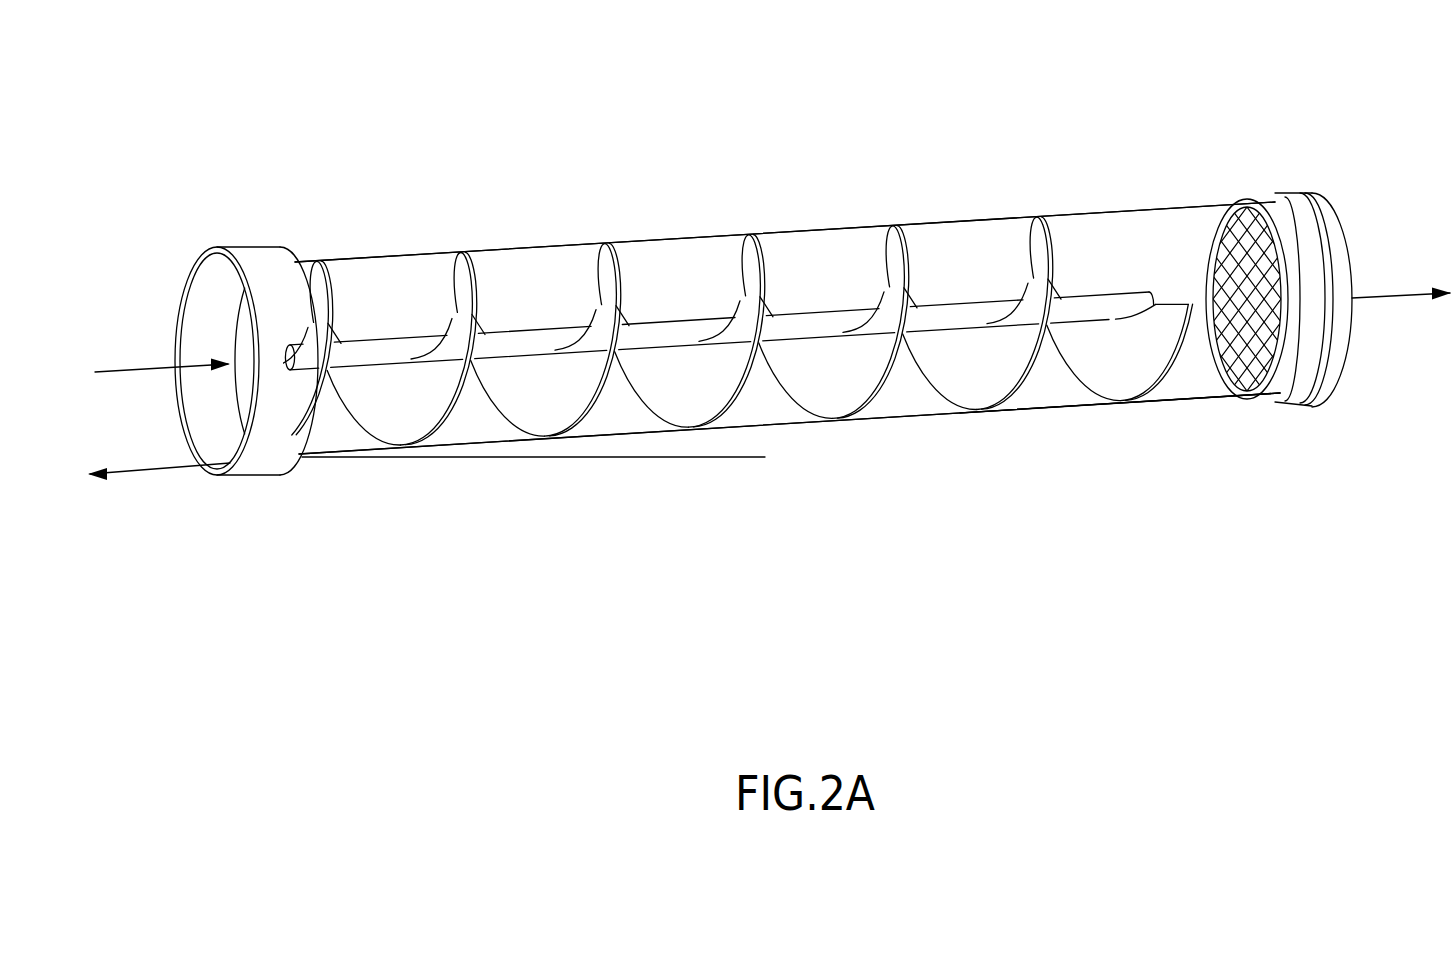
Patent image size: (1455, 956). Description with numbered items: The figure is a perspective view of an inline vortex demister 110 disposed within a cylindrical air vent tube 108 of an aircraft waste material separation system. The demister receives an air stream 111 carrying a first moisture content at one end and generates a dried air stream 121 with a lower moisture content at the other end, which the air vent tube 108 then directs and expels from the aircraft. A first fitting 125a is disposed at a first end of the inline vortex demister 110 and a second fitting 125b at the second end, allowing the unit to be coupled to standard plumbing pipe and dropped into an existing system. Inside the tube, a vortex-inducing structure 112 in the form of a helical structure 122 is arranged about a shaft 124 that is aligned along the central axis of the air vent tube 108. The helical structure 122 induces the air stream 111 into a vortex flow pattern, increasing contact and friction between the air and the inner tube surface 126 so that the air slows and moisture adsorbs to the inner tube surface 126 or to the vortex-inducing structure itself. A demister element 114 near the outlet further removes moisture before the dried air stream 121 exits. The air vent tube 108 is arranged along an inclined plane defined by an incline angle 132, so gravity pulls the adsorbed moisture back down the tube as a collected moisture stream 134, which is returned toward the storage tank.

The inline vortex demister 110 is at (190, 113).
The air vent tube 108 is at (839, 228).
The vortex-inducing structure 112 is at (605, 243).
The demister element 114 is at (1243, 212).
The dried air stream 121 is at (1388, 293).
The helical structure 122 is at (967, 393).
The shaft 124 is at (969, 315).
The first fitting 125a is at (250, 250).
The second fitting 125b is at (1307, 198).
The inner tube surface 126 is at (1063, 398).
The air stream 111 is at (152, 367).
The incline angle 132 is at (770, 452).
The collected moisture stream 134 is at (160, 465).